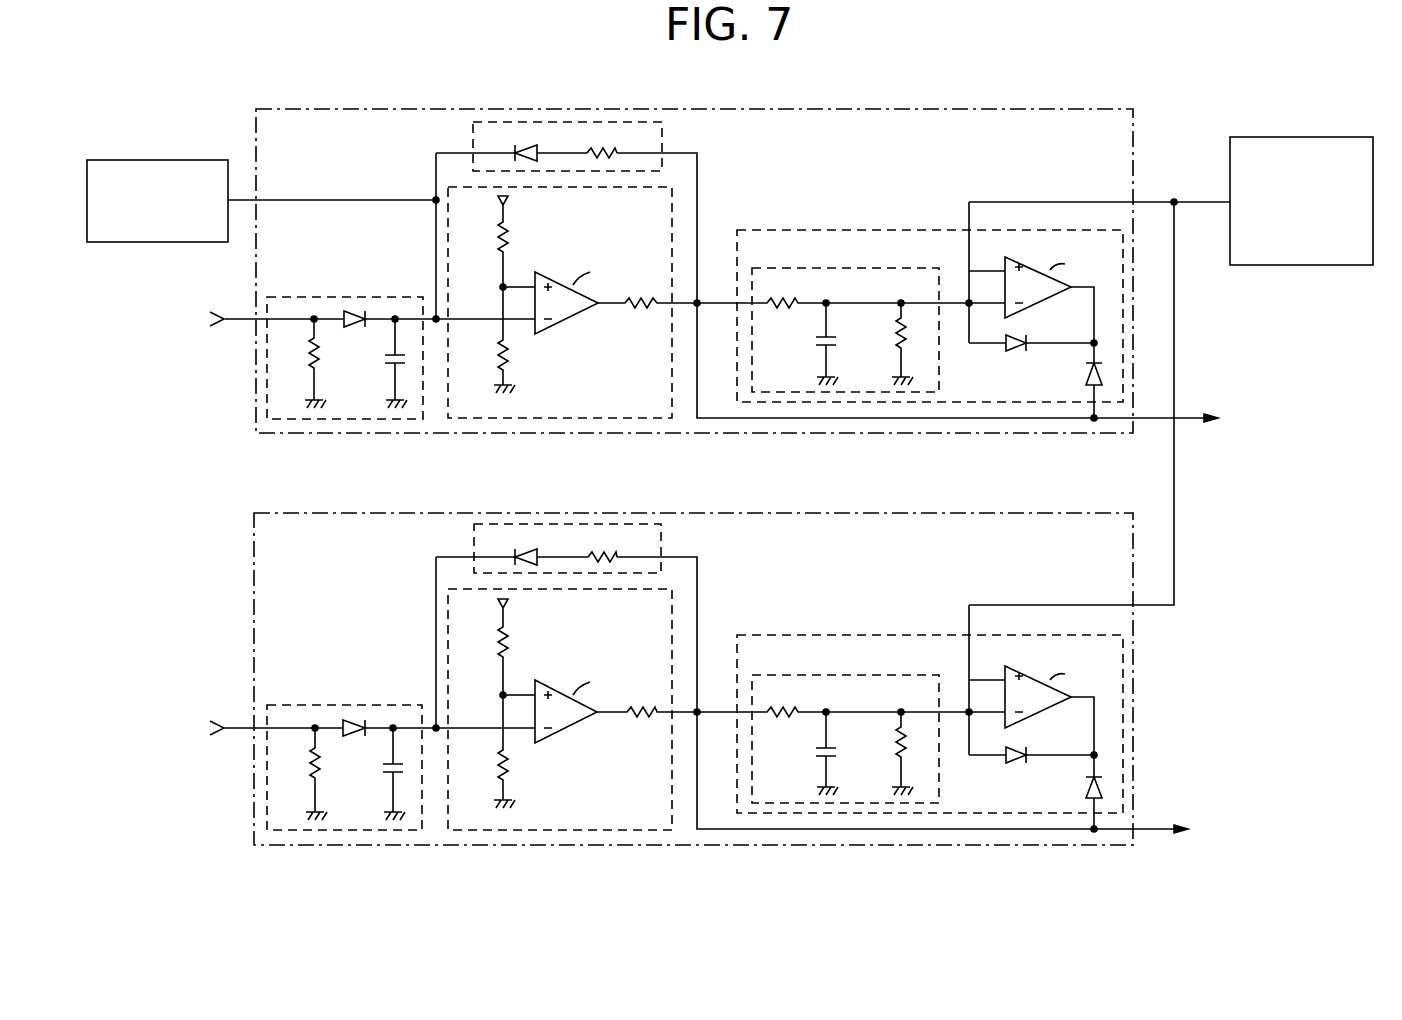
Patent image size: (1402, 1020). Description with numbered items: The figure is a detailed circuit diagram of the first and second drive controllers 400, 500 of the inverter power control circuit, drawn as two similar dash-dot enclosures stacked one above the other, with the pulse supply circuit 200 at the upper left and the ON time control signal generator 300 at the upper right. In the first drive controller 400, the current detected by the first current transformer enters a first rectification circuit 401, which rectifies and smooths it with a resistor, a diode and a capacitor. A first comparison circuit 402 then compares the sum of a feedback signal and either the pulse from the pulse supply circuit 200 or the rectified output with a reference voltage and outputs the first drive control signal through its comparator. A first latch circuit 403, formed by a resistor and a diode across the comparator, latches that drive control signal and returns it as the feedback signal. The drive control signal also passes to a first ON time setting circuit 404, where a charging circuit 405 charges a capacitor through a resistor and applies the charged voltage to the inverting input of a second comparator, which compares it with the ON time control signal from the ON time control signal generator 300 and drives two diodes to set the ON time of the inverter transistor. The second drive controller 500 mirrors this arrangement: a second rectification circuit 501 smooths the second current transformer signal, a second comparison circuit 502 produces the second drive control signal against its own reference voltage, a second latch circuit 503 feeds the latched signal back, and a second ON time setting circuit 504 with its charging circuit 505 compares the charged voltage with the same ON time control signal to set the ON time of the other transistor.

The pulse supply circuit 200 is at (98, 160).
The ON time control signal generator 300 is at (1256, 137).
The first drive controller 400 is at (936, 108).
The first rectification circuit 401 is at (307, 297).
The first comparison circuit 402 is at (518, 419).
The first latch circuit 403 is at (662, 132).
The first ON time setting circuit 404 is at (775, 230).
The charging circuit 405 is at (865, 268).
The second drive controller 500 is at (936, 513).
The second rectification circuit 501 is at (307, 705).
The second comparison circuit 502 is at (518, 830).
The second latch circuit 503 is at (661, 533).
The second ON time setting circuit 504 is at (775, 635).
The charging circuit 505 is at (862, 675).